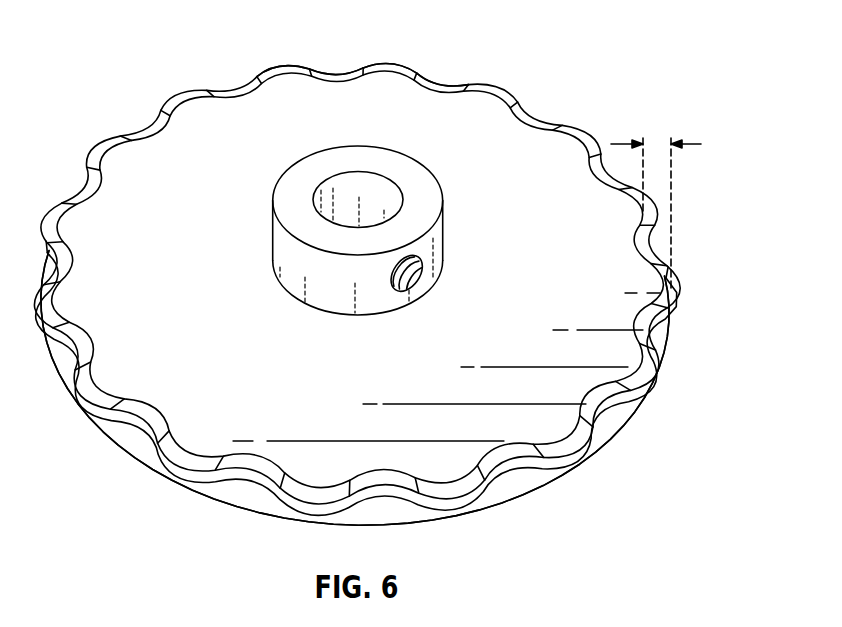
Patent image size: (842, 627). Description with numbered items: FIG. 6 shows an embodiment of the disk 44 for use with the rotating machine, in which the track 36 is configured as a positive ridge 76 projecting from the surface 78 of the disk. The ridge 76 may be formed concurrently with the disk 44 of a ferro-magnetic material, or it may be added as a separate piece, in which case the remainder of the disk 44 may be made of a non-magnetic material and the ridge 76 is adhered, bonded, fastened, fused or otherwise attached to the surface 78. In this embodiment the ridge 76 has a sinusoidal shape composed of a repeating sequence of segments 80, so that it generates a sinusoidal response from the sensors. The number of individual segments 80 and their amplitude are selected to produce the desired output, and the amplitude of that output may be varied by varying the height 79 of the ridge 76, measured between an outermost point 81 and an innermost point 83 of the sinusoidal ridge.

The track 36 is at (667, 312).
The disk 44 is at (714, 313).
The positive ridge 76 is at (594, 144).
The surface 78 is at (518, 160).
The height 79 is at (684, 138).
The segments 80 is at (408, 65).
The outermost point 81 is at (674, 279).
The innermost point 83 is at (640, 214).